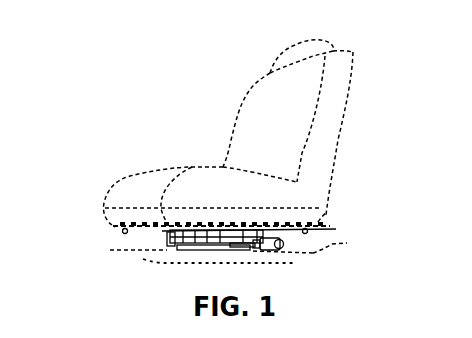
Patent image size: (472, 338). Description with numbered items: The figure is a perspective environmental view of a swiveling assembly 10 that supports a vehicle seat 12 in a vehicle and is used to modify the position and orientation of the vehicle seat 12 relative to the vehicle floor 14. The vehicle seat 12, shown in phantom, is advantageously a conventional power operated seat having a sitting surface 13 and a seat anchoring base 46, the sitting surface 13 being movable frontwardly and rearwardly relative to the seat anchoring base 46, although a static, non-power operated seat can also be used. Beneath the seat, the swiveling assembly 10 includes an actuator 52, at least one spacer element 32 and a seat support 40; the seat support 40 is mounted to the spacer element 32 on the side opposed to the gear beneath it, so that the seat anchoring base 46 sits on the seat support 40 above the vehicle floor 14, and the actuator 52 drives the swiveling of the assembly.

The swiveling assembly 10 is at (74, 182).
The vehicle seat 12 is at (233, 109).
The sitting surface 13 is at (192, 167).
The vehicle floor 14 is at (347, 243).
The spacer element 32 is at (167, 232).
The seat support 40 is at (336, 229).
The seat anchoring base 46 is at (326, 213).
The actuator 52 is at (284, 247).